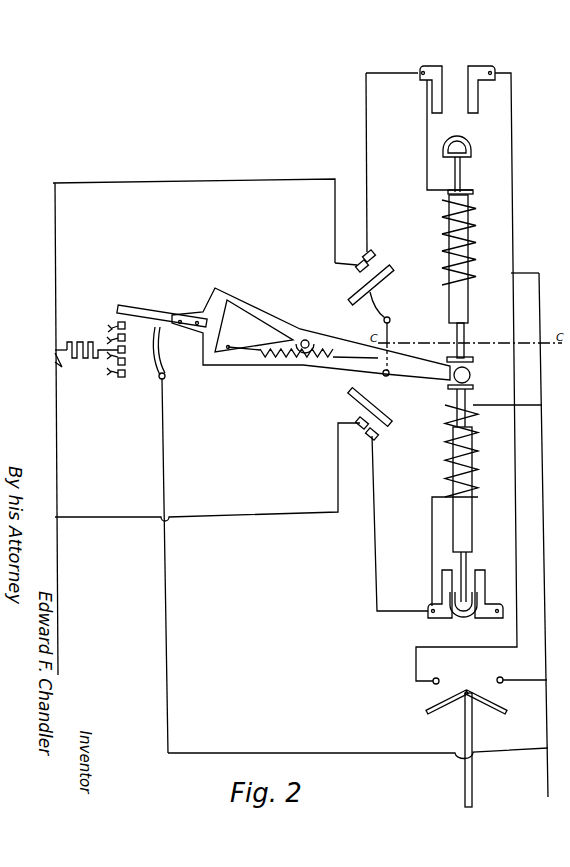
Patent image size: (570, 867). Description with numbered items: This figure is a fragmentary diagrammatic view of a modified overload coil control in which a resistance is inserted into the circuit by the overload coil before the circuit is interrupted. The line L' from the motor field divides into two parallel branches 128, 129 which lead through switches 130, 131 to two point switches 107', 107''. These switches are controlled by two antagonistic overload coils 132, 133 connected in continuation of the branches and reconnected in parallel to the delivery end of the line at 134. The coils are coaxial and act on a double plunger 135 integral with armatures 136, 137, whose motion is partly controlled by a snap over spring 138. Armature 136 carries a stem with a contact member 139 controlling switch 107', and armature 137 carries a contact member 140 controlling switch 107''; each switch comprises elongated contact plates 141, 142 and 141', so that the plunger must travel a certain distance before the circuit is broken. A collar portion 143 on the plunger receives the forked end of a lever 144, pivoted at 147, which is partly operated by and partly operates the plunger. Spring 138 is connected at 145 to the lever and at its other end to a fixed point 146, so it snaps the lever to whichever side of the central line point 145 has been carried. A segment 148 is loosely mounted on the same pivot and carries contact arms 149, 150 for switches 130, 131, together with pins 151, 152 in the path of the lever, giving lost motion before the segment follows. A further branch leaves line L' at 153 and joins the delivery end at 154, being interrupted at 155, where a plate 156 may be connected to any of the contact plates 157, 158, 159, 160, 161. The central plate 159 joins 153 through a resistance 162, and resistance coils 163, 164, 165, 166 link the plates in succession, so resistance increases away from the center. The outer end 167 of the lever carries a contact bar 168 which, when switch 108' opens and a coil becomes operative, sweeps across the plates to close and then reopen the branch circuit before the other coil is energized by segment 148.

The two point switch 107' is at (396, 643).
The two point switch 107'' is at (477, 57).
The switch 108' is at (428, 742).
The parallel branch 128 is at (235, 514).
The parallel branch 129 is at (217, 179).
The switch 130 is at (383, 413).
The switch 131 is at (378, 263).
The overload coil 132 is at (473, 445).
The overload coil 133 is at (472, 245).
The reconnection point 134 is at (540, 405).
The double plunger 135 is at (465, 333).
The armature 136 is at (470, 530).
The armature 137 is at (468, 302).
The snap over spring 138 is at (272, 361).
The contact member 139 is at (471, 617).
The contact member 140 is at (468, 142).
The elongated contact plate 141 is at (443, 594).
The elongated contact plate 141' is at (416, 101).
The elongated contact plate 142 is at (480, 98).
The collar portion 143 is at (474, 361).
The lever 144 is at (419, 338).
The spring connection point 145 is at (305, 367).
The fixed point 146 is at (228, 349).
The pivot 147 is at (304, 339).
The segment 148 is at (323, 330).
The contact arm 149 is at (355, 407).
The contact arm 150 is at (390, 279).
The pin 151 is at (406, 383).
The pin 152 is at (391, 318).
The branch connection point 153 is at (60, 366).
The delivery end connection point 154 is at (547, 748).
The interruption point 155 is at (138, 384).
The plate 156 is at (165, 380).
The contact plate 157 is at (119, 378).
The contact plate 158 is at (125, 361).
The central contact plate 159 is at (125, 349).
The contact plate 160 is at (125, 337).
The contact plate 161 is at (126, 306).
The resistance 162 is at (71, 343).
The resistance coil 163 is at (109, 358).
The resistance coil 164 is at (109, 375).
The resistance coil 165 is at (108, 340).
The resistance coil 166 is at (109, 326).
The outer end of lever 167 is at (222, 293).
The contact bar 168 is at (140, 308).
The line L' is at (76, 429).